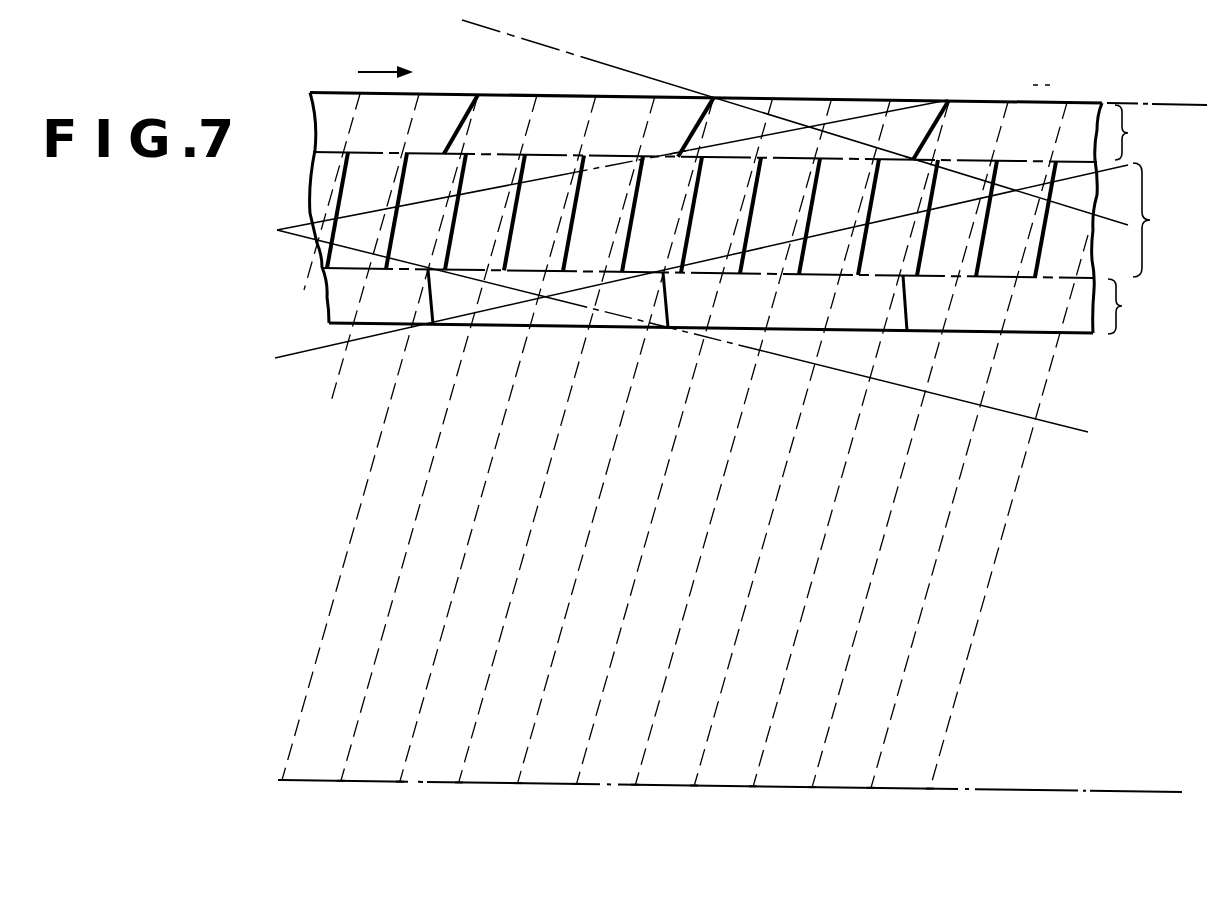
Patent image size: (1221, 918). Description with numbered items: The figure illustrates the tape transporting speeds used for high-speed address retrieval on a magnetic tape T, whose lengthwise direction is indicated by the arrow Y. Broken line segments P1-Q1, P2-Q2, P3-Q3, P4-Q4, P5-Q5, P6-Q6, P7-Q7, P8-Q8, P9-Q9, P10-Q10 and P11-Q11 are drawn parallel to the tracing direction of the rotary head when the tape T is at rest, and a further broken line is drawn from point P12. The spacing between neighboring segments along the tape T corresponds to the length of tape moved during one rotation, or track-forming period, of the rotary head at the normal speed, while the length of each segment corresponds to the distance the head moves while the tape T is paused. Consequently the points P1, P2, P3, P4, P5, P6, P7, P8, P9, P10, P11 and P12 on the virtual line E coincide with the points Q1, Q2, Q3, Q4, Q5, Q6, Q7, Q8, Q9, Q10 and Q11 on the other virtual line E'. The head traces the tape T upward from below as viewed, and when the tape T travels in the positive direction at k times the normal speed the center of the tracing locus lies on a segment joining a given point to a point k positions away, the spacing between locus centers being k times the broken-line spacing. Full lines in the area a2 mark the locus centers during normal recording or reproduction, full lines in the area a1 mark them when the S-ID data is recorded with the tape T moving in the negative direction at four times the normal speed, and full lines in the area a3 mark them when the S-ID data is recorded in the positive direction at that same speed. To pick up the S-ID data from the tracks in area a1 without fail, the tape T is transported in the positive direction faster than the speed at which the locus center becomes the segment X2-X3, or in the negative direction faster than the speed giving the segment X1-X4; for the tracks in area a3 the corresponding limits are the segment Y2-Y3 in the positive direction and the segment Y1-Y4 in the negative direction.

The magnetic tape T is at (327, 92).
The tape travel direction Y is at (385, 58).
The point on virtual line E' Q1 is at (384, 422).
The point on virtual line E' Q2 is at (443, 423).
The point on virtual line E' Q3 is at (502, 423).
The point on virtual line E' Q4 is at (562, 424).
The point on virtual line E' Q5 is at (620, 400).
The point on virtual line E' Q6 is at (679, 425).
The point on virtual line E' Q7 is at (737, 426).
The point on virtual line E' Q8 is at (796, 427).
The point on virtual line E' Q9 is at (855, 401).
The point on virtual line E' Q10 is at (931, 428).
The point on virtual line E' Q11 is at (1140, 63).
The end point of line segment X1-X4 X1 is at (948, 101).
The end point of line segment X2-X3 X2 is at (714, 98).
The end point of line segment X2- X3 is at (913, 162).
The end point of line segment X1- X4 is at (676, 158).
The end point of line segment Y1-Y4 Y1 is at (433, 325).
The end point of line segment Y2-Y3 Y2 is at (668, 328).
The end point of line segment Y2- Y3 is at (426, 270).
The end point of line segment Y1- Y4 is at (667, 274).
The point on virtual line E P1 is at (283, 798).
The point on virtual line E P2 is at (341, 799).
The point on virtual line E P3 is at (400, 799).
The point on virtual line E P4 is at (459, 799).
The point on virtual line E P5 is at (518, 799).
The point on virtual line E P6 is at (577, 800).
The point on virtual line E P7 is at (636, 801).
The point on virtual line E P8 is at (696, 801).
The point on virtual line E P9 is at (754, 801).
The point on virtual line E P10 is at (813, 801).
The point on virtual line E P11 is at (872, 801).
The track position on line E P12 is at (930, 801).
The virtual line E is at (732, 775).
The virtual line E' is at (1157, 71).
The area a1 is at (728, 133).
The area a2 is at (749, 214).
The area a3 is at (733, 301).